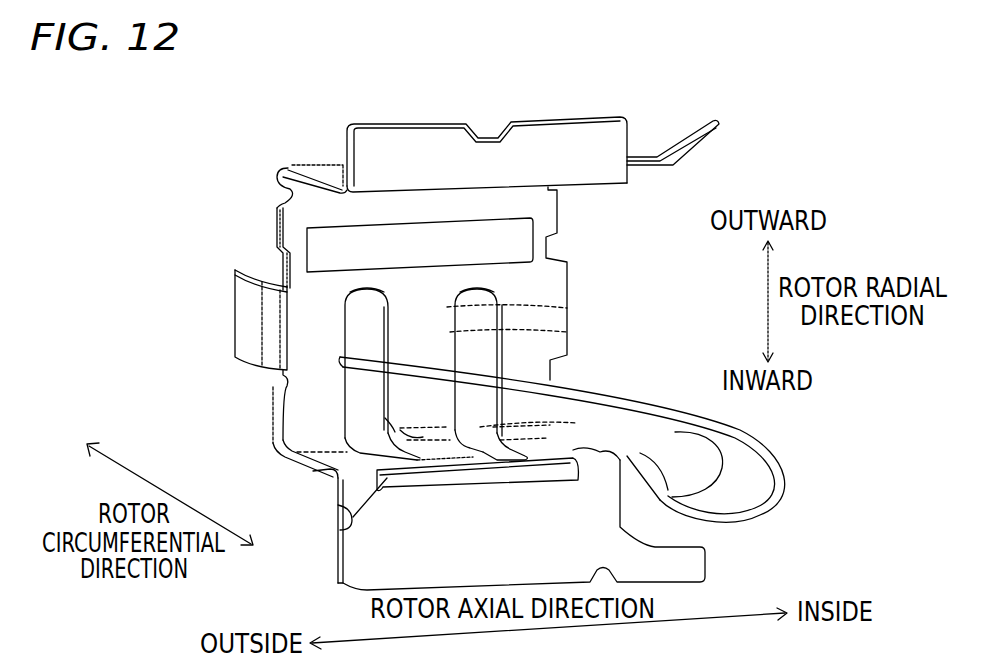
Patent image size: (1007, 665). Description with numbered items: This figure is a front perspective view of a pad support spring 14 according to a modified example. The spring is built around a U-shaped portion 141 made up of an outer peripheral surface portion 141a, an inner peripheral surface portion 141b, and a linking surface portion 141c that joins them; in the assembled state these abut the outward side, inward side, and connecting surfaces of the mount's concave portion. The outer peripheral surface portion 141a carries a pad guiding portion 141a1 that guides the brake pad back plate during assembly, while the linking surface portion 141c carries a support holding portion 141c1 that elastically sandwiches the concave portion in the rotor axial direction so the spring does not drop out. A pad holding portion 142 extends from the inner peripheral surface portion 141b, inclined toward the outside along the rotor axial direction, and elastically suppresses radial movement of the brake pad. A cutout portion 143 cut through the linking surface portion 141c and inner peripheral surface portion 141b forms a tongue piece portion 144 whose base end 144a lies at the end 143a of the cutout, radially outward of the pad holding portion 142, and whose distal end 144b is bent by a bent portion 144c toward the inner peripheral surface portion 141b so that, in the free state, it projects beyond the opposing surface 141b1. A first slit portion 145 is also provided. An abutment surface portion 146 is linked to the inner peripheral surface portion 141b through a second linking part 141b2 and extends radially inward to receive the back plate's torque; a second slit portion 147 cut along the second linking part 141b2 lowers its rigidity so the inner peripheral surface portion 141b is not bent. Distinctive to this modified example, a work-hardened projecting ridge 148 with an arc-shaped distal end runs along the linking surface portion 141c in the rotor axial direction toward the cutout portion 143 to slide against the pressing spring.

The pad support spring 14 is at (156, 124).
The U-shaped portion 141 is at (208, 184).
The outer peripheral surface portion 141a is at (313, 167).
The pad guiding portion 141a1 is at (706, 127).
The inner peripheral surface portion 141b is at (283, 443).
The opposing surface 141b1 is at (313, 472).
The second linking part 141b2 is at (338, 478).
The linking surface portion 141c is at (297, 211).
The support holding portion 141c1 is at (243, 318).
The pad holding portion 142 is at (650, 402).
The cutout portion 143 is at (350, 388).
The end of cutout portion 143a is at (365, 292).
The tongue piece portion 144 is at (567, 332).
The base end 144a is at (567, 307).
The distal end 144b is at (577, 423).
The bent portion 144c is at (385, 418).
The first slit portion 145 is at (343, 163).
The abutment surface portion 146 is at (368, 557).
The second slit portion 147 is at (340, 524).
The projecting ridge 148 is at (318, 244).